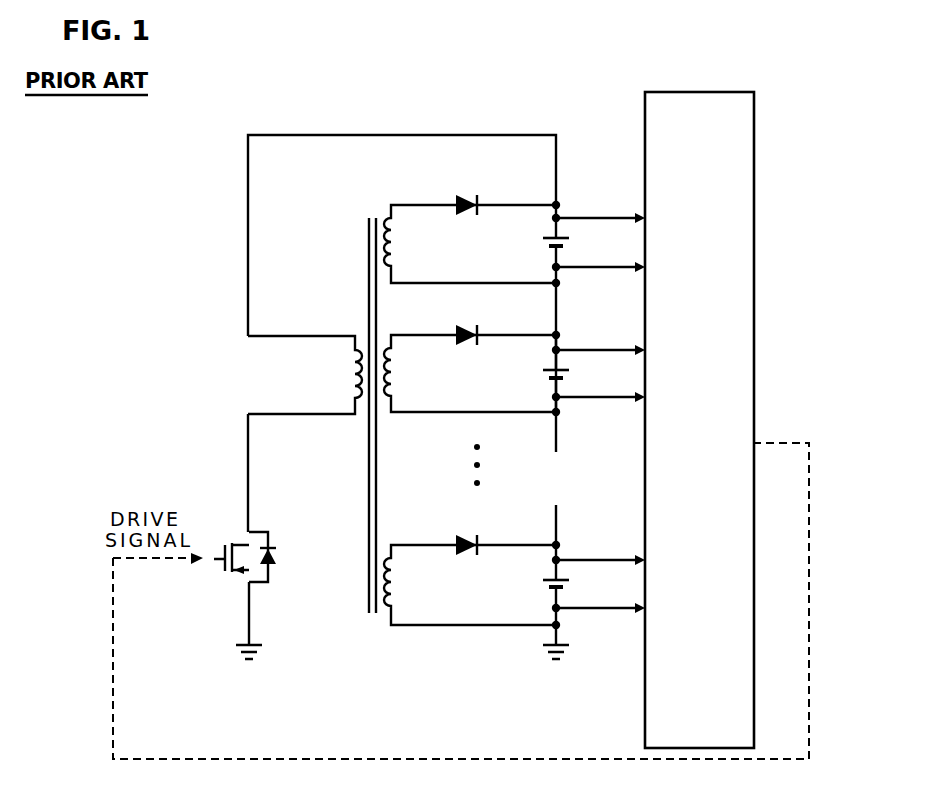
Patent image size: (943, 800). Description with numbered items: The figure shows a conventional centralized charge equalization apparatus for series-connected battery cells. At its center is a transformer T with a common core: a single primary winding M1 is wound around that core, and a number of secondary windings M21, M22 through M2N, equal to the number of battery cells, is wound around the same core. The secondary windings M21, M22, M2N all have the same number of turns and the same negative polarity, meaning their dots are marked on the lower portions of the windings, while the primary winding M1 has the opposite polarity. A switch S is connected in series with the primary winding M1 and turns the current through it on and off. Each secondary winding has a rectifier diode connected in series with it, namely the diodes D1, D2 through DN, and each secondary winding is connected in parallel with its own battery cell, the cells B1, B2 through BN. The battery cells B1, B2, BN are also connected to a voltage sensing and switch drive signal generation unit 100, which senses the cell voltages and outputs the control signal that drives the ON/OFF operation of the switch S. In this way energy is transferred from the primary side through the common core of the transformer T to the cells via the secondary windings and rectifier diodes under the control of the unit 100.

The voltage sensing and switch drive signal generation unit 100 is at (754, 261).
The transformer T is at (359, 384).
The primary winding M1 is at (305, 375).
The secondary winding M21 is at (470, 244).
The secondary winding M22 is at (470, 373).
The secondary winding M2N is at (470, 585).
The rectifier diode D1 is at (468, 219).
The rectifier diode D2 is at (470, 350).
The rectifier diode DN is at (469, 560).
The battery cell B1 is at (594, 244).
The battery cell B2 is at (594, 373).
The battery cell BN is at (594, 600).
The switch S is at (255, 595).